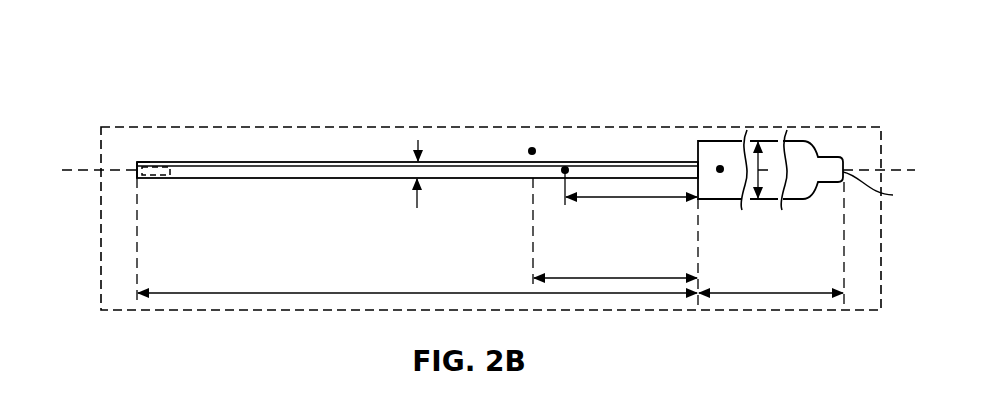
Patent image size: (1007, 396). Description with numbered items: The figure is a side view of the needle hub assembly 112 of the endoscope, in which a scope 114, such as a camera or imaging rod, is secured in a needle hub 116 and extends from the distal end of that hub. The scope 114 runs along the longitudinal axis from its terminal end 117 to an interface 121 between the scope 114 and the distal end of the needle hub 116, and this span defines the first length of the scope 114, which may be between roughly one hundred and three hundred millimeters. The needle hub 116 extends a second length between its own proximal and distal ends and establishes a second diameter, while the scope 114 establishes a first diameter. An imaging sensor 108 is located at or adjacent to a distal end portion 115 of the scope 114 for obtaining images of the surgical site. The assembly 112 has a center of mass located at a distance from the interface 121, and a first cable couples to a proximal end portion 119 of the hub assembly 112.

The imaging sensor 108 is at (167, 158).
The needle hub assembly 112 is at (146, 100).
The scope 114 is at (366, 158).
The distal end portion 115 is at (138, 161).
The needle hub 116 is at (713, 139).
The terminal end 117 is at (135, 168).
The proximal end portion 119 is at (887, 189).
The interface 121 is at (697, 170).